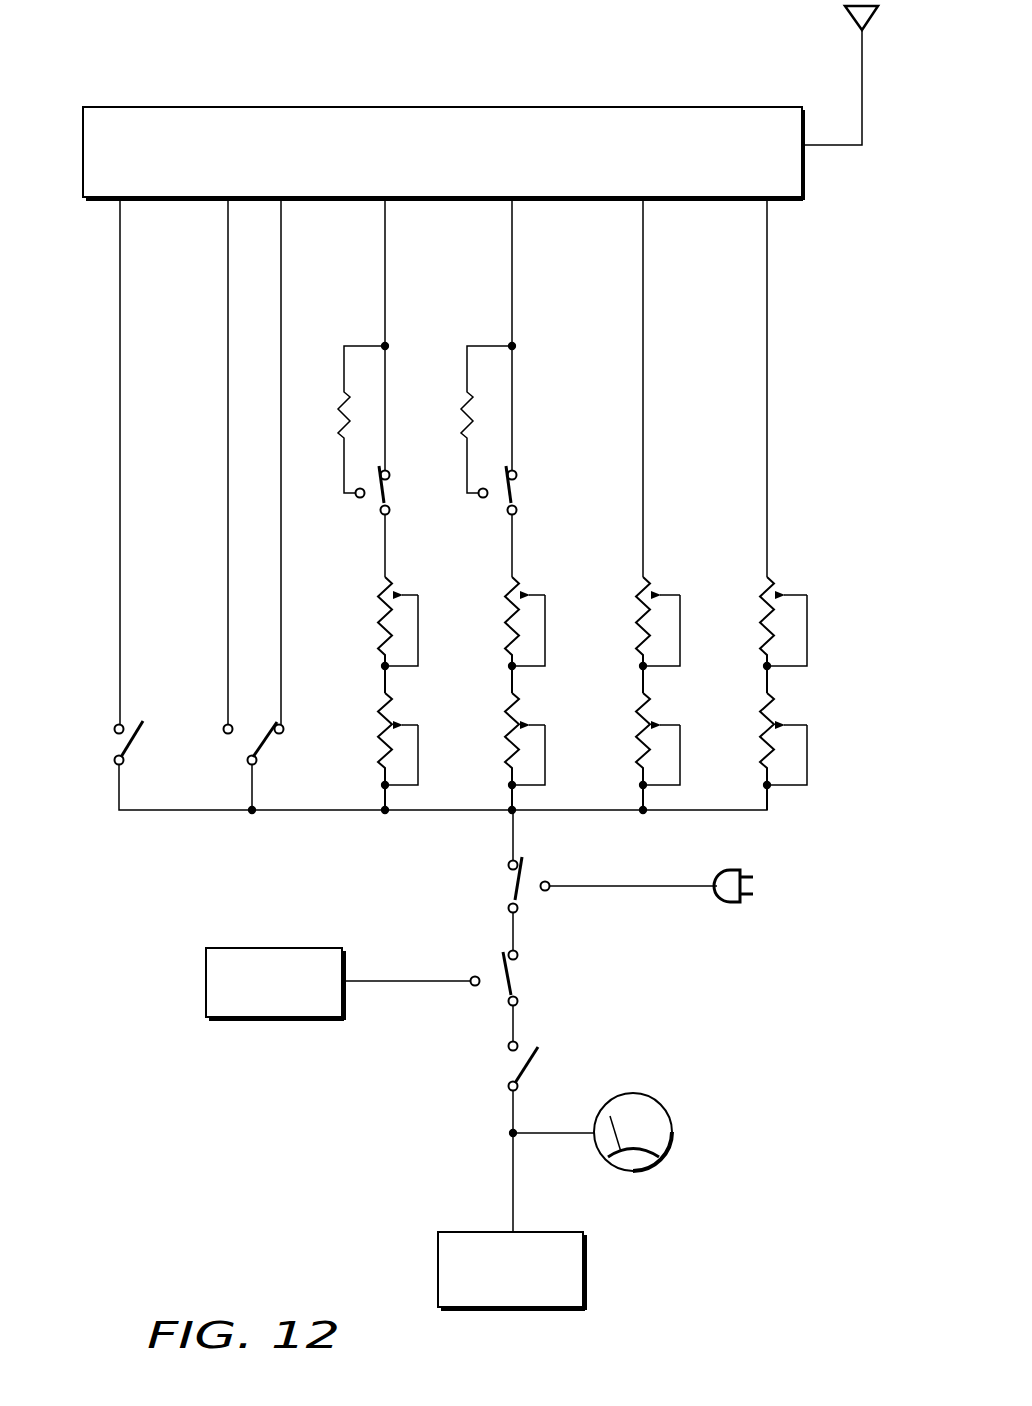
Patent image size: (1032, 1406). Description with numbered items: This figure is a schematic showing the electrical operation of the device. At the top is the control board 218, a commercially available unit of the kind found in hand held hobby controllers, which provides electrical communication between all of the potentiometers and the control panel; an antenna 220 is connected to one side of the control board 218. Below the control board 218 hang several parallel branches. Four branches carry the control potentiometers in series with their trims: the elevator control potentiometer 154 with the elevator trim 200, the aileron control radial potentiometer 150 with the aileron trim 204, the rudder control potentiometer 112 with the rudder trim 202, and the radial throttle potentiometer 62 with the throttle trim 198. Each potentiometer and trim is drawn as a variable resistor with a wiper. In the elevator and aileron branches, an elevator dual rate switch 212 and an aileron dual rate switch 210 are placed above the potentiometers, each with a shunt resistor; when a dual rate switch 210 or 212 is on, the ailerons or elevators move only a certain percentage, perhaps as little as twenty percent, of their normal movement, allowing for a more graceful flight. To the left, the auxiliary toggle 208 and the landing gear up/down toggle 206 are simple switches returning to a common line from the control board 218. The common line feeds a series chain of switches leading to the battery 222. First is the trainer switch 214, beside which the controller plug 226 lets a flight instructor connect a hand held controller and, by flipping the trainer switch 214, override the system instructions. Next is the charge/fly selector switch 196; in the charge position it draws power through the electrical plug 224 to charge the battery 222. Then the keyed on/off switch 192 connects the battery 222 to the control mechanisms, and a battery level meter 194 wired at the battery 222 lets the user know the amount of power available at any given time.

The control board 218 is at (716, 107).
The antenna 220 is at (877, 22).
The elevator dual rate switch 212 is at (387, 494).
The aileron dual rate switch 210 is at (514, 494).
The elevator control potentiometer 154 is at (380, 617).
The aileron control radial potentiometer 150 is at (508, 617).
The rudder control potentiometer 112 is at (638, 612).
The radial throttle potentiometer 62 is at (762, 611).
The elevator trim 200 is at (380, 709).
The aileron trim 204 is at (508, 712).
The rudder trim 202 is at (637, 722).
The throttle trim 198 is at (762, 722).
The auxiliary toggle 208 is at (139, 733).
The landing gear up/down toggle 206 is at (271, 733).
The trainer switch 214 is at (513, 889).
The controller plug 226 is at (713, 893).
The charge/fly selector switch 196 is at (513, 985).
The electrical plug 224 is at (315, 948).
The keyed on/off switch 192 is at (560, 1055).
The battery level meter 194 is at (672, 1126).
The battery 222 is at (558, 1232).